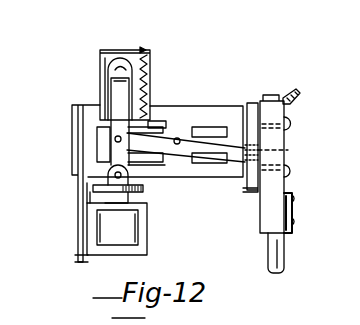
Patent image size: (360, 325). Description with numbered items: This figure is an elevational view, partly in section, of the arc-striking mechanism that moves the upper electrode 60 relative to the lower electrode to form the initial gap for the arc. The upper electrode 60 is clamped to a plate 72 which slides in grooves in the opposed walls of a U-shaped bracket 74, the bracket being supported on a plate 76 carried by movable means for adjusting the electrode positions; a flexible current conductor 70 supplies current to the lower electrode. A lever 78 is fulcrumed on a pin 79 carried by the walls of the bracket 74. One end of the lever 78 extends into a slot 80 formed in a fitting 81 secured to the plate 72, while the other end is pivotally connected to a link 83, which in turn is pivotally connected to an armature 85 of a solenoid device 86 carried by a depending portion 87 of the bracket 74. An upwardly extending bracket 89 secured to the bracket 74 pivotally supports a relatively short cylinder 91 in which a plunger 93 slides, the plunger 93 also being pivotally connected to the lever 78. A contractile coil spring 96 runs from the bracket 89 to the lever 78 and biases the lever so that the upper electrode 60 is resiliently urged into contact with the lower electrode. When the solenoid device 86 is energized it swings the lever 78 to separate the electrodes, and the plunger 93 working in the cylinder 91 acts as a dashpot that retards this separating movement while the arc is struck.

The upper electrode 60 is at (285, 258).
The flexible current conductor 70 is at (291, 96).
The plate 72 is at (263, 222).
The U-shaped bracket 74 is at (209, 117).
The plate 76 is at (72, 125).
The lever 78 is at (186, 135).
The pin 79 is at (179, 144).
The slot 80 is at (290, 148).
The fitting 81 is at (246, 190).
The link 83 is at (115, 148).
The armature 85 is at (145, 189).
The solenoid device 86 is at (133, 232).
The depending portion 87 is at (73, 232).
The upwardly extending bracket 89 is at (125, 50).
The cylinder 91 is at (110, 67).
The plunger 93 is at (118, 92).
The contractile coil spring 96 is at (146, 72).